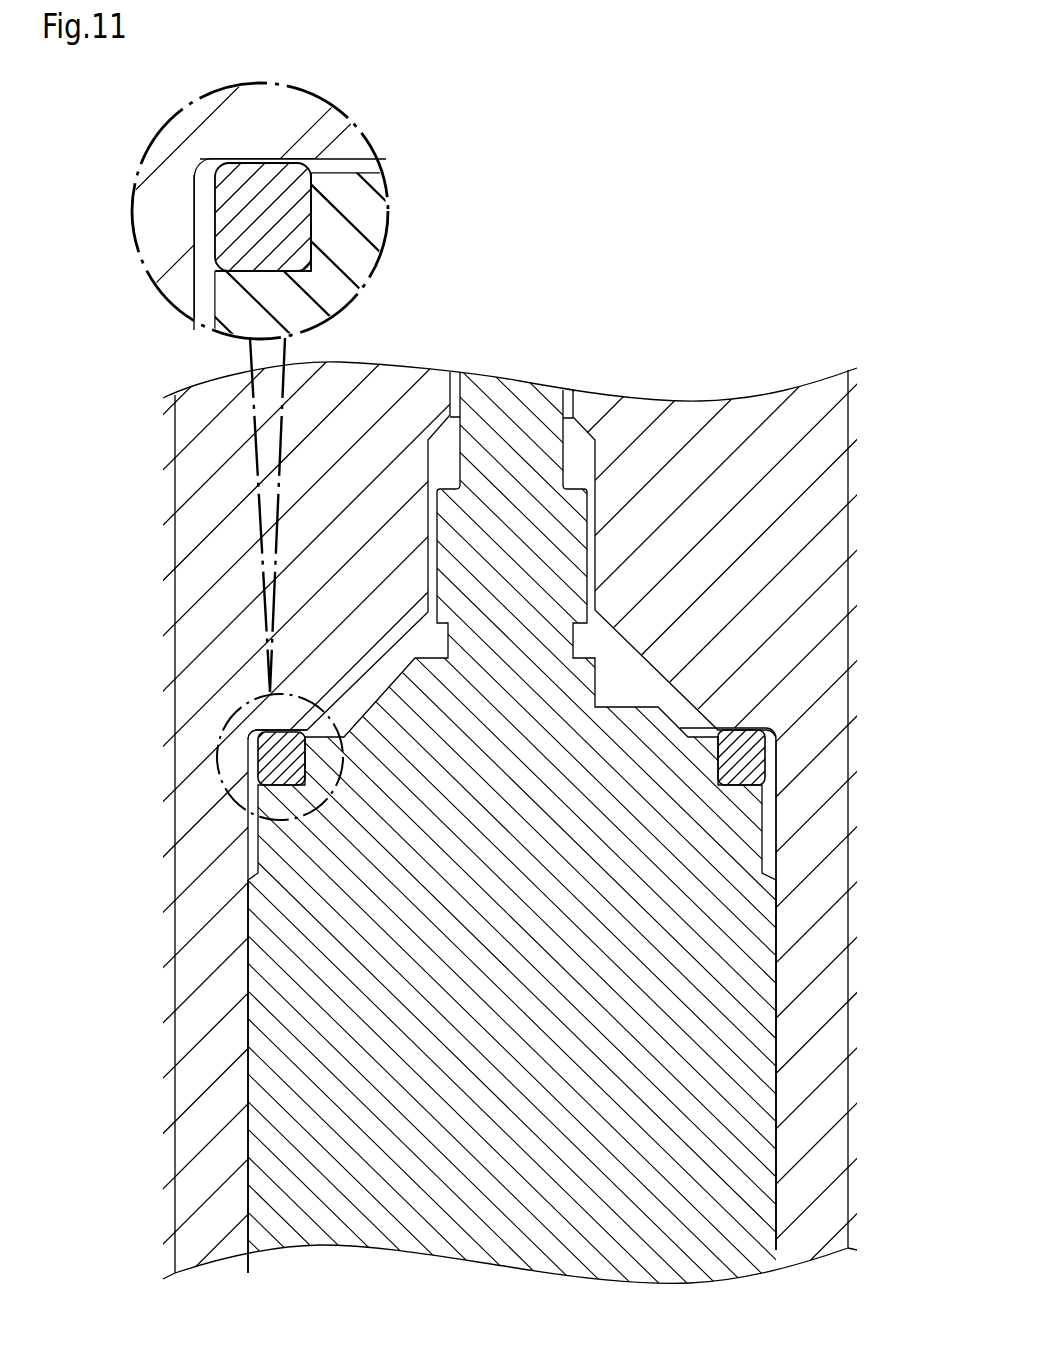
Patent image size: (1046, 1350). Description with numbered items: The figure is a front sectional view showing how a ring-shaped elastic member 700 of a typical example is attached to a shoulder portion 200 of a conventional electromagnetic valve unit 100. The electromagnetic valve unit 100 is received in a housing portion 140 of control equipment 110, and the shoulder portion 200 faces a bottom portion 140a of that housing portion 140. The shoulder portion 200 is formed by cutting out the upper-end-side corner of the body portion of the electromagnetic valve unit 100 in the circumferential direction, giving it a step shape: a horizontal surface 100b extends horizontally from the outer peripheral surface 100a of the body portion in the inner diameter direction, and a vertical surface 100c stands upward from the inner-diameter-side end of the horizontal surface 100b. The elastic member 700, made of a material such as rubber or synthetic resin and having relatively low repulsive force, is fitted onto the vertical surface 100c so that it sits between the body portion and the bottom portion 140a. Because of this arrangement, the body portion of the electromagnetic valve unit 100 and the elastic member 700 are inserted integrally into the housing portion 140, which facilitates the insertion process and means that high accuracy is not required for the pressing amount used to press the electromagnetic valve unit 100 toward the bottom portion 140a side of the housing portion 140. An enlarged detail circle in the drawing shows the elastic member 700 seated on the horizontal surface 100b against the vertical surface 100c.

The electromagnetic valve unit 100 is at (742, 1025).
The outer peripheral surface 100a is at (250, 983).
The horizontal surface 100b is at (306, 272).
The vertical surface 100c is at (310, 233).
The control equipment 110 is at (815, 558).
The housing portion 140 is at (782, 1114).
The bottom portion 140a is at (778, 755).
The shoulder portion 200 is at (488, 192).
The elastic member 700 is at (253, 751).